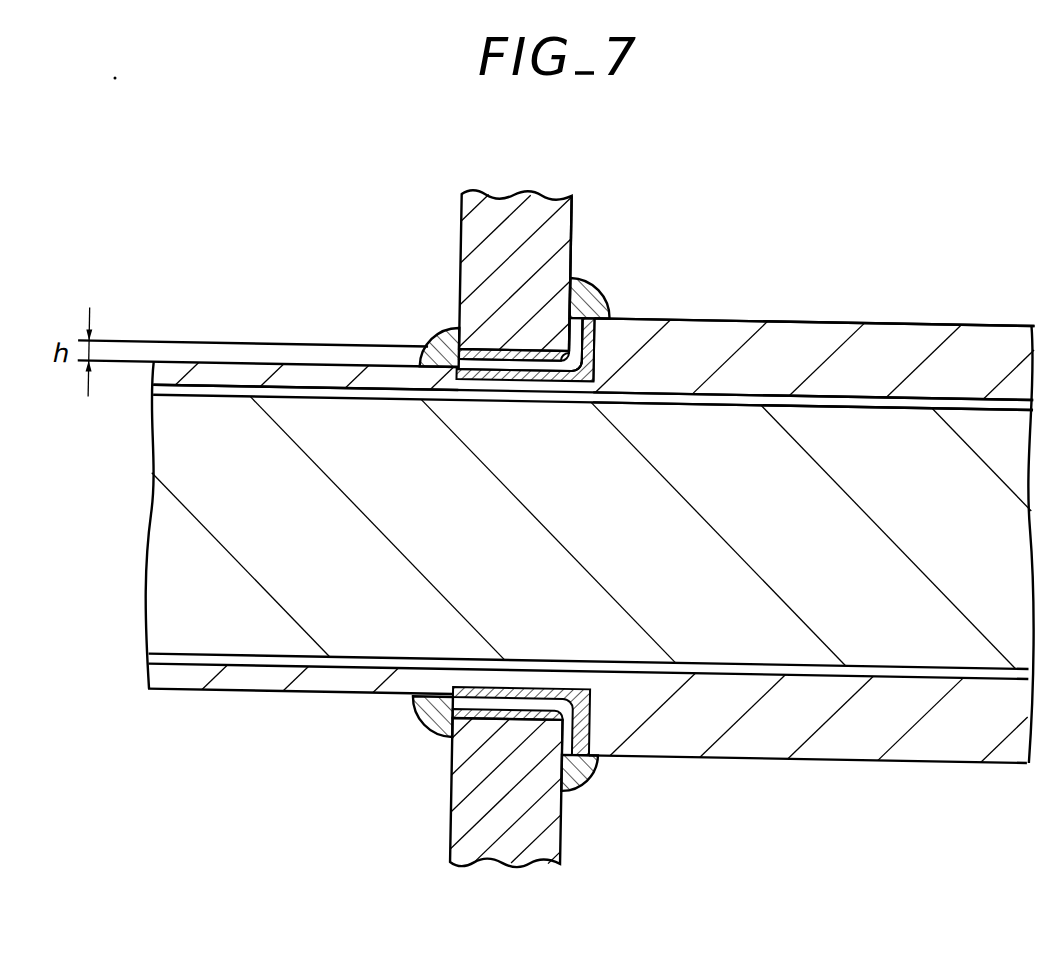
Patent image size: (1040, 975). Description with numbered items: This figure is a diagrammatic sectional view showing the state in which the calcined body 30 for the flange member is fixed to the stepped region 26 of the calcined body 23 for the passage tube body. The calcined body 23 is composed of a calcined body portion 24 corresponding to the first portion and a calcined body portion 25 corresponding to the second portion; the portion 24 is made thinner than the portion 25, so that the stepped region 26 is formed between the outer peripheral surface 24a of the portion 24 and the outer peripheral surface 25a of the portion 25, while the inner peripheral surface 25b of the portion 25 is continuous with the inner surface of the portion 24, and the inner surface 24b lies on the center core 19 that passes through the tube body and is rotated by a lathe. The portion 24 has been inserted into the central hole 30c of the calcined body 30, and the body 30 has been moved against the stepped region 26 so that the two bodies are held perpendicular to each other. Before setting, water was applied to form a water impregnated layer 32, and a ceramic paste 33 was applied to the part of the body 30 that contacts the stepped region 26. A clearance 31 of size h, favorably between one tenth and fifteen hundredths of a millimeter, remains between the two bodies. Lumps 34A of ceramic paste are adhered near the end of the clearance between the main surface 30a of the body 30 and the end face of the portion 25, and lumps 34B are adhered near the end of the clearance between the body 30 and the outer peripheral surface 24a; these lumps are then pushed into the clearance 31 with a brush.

The center core 19 is at (161, 541).
The calcined body for the passage tube body 23 is at (978, 309).
The calcined body portion corresponding to the first portion 24 is at (288, 376).
The outer peripheral surface of the calcined body portion 24a is at (220, 348).
The lower thin layer of 24 24b is at (226, 400).
The calcined body portion corresponding to the second portion 25 is at (825, 323).
The outer peripheral surface of the calcined body portion 25a is at (737, 315).
The inner peripheral surface of the calcined body portion 25b is at (873, 399).
The stepped region 26 is at (583, 704).
The calcined body for the flange member 30 is at (443, 233).
The main surface of the calcined body 30a is at (570, 214).
The central hole of the calcined body 30c is at (538, 378).
The clearance 31 is at (500, 356).
The water impregnated layer 32 is at (497, 366).
The ceramic paste 33 is at (460, 379).
The lumps of the ceramic paste 34A is at (592, 294).
The lumps of the ceramic paste 34B is at (435, 339).